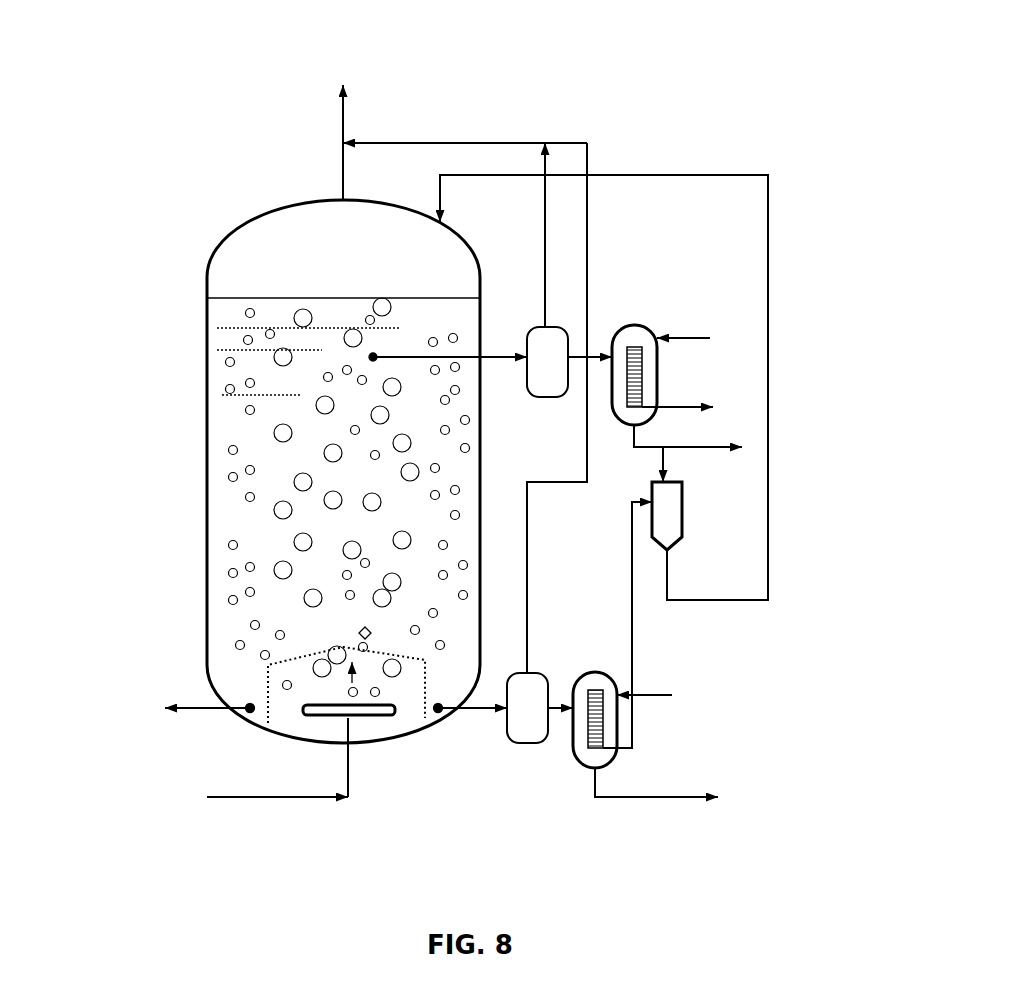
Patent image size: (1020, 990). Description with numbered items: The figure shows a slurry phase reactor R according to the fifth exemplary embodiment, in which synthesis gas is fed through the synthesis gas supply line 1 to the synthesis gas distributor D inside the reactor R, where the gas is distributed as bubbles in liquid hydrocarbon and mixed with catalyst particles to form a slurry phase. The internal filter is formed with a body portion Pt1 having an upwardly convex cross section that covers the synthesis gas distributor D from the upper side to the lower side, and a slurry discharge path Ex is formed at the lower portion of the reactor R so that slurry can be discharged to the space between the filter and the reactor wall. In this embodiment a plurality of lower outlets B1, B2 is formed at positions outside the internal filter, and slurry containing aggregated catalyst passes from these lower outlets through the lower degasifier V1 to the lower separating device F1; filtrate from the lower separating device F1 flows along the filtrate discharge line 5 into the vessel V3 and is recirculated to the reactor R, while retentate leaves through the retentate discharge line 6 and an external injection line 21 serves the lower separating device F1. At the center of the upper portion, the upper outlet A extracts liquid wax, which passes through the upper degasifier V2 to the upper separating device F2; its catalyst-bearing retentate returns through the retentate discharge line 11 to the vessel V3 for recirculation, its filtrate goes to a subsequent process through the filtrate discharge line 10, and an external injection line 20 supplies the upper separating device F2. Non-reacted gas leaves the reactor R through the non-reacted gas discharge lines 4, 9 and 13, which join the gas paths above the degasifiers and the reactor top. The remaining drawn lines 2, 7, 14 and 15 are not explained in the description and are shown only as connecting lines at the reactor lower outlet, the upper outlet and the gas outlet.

The slurry phase reactor R is at (286, 471).
The synthesis gas supply line 1 is at (274, 808).
The slurry withdrawal line 2 is at (472, 765).
The non-reacted gas discharge line 4 is at (569, 408).
The filtrate discharge line 5 is at (688, 625).
The retentate discharge line 6 is at (656, 846).
The liquid withdrawal line 7 is at (450, 413).
The non-reacted gas discharge line 9 is at (465, 169).
The filtrate discharge line 10 is at (699, 358).
The retentate discharge line 11 is at (647, 492).
The non-reacted gas discharge line 13 is at (298, 163).
The off-gas line 14 is at (290, 93).
The extraction line 15 is at (178, 668).
The external injection line 20 is at (701, 280).
The external injection line 21 is at (701, 739).
The upper outlet A is at (396, 305).
The lower outlet B1 is at (233, 750).
The lower outlet B2 is at (423, 753).
The synthesis gas distributor D is at (359, 770).
The slurry discharge path Ex is at (334, 667).
The body portion Pt1 is at (270, 662).
The lower degasifier V1 is at (524, 776).
The upper degasifier V2 is at (545, 301).
The vessel V3 is at (763, 507).
The lower separating device F1 is at (568, 787).
The upper separating device F2 is at (645, 319).